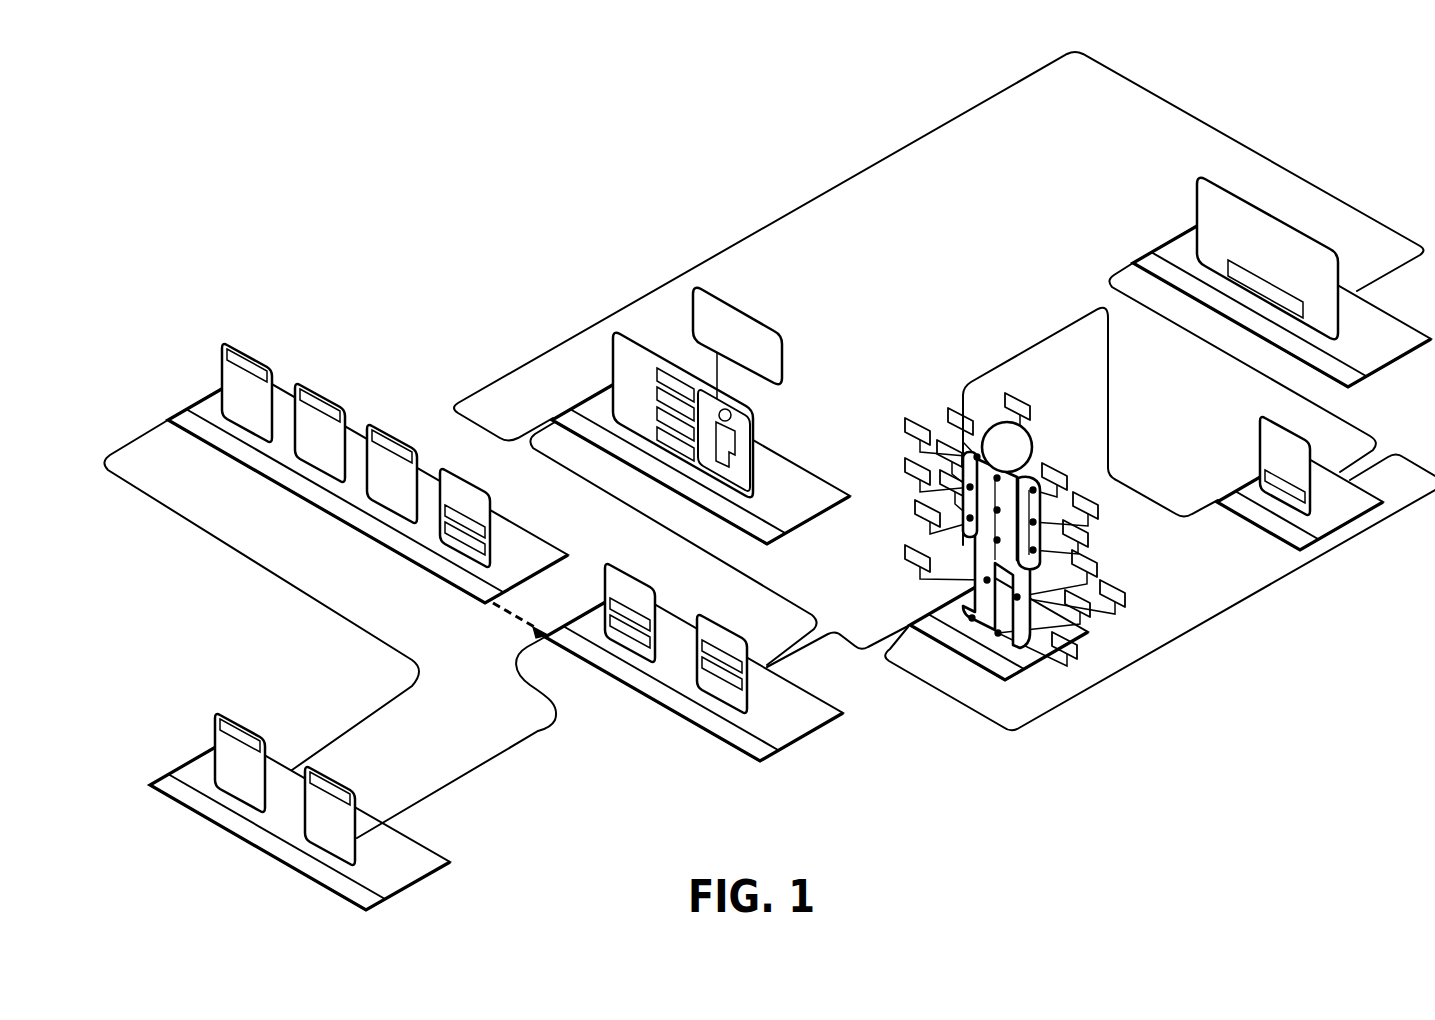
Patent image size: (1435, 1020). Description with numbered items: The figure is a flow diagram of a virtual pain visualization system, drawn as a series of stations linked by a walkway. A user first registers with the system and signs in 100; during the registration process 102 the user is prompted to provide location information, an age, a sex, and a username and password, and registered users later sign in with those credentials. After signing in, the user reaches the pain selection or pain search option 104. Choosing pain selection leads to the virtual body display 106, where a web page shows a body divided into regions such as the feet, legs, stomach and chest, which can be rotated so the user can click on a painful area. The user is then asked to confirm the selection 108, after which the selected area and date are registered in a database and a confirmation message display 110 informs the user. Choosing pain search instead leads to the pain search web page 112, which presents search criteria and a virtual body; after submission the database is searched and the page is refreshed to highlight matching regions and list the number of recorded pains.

The sign-in 100 is at (416, 866).
The registration process 102 is at (541, 562).
The pain selection or pain search option 104 is at (806, 722).
The virtual body display 106 is at (922, 603).
The selection confirmation 108 is at (1362, 509).
The confirmation message display 110 is at (1394, 346).
The pain search web page 112 is at (813, 501).